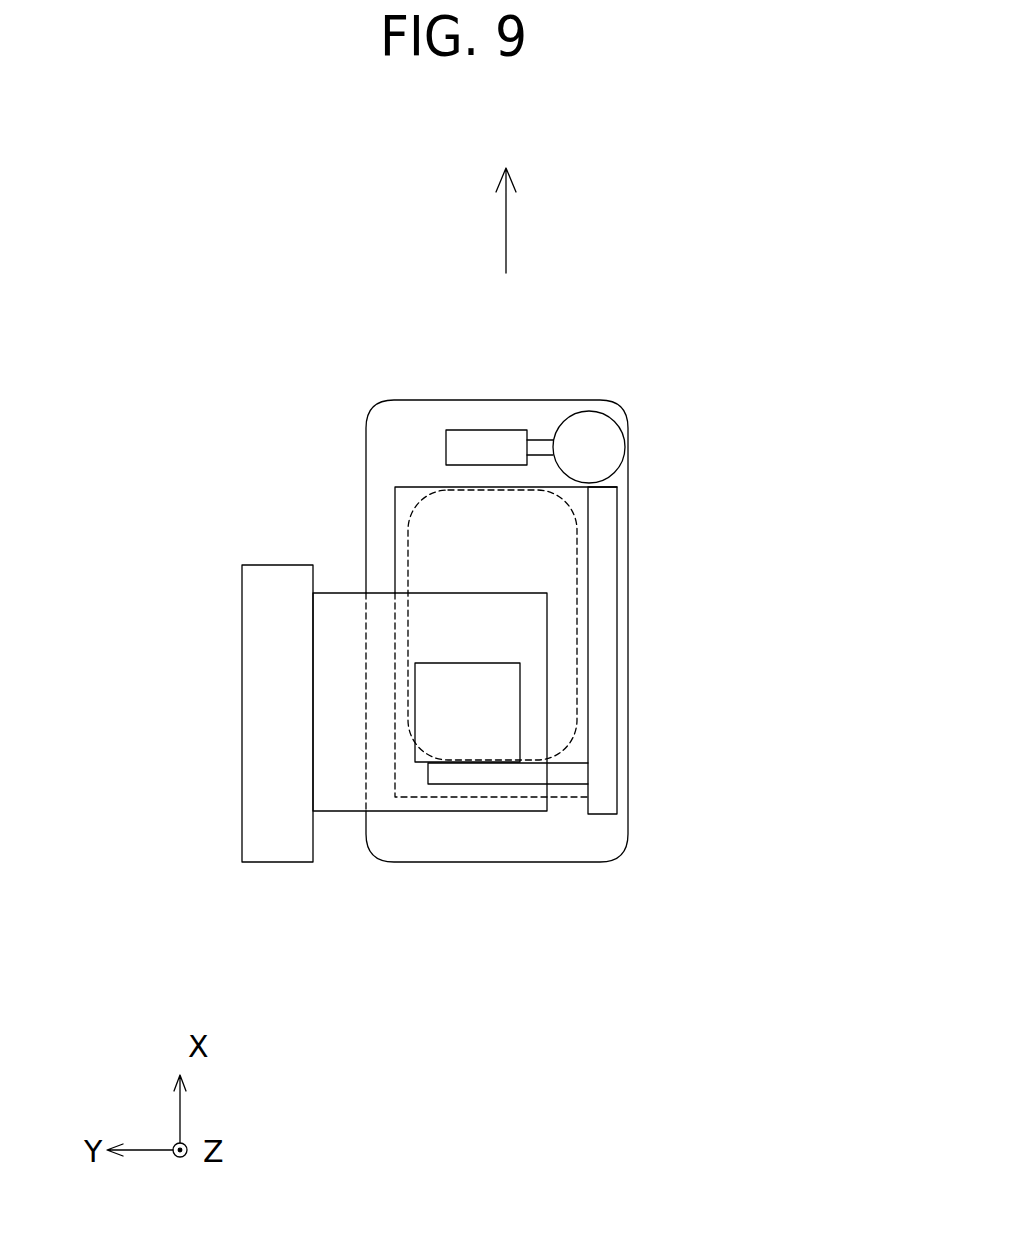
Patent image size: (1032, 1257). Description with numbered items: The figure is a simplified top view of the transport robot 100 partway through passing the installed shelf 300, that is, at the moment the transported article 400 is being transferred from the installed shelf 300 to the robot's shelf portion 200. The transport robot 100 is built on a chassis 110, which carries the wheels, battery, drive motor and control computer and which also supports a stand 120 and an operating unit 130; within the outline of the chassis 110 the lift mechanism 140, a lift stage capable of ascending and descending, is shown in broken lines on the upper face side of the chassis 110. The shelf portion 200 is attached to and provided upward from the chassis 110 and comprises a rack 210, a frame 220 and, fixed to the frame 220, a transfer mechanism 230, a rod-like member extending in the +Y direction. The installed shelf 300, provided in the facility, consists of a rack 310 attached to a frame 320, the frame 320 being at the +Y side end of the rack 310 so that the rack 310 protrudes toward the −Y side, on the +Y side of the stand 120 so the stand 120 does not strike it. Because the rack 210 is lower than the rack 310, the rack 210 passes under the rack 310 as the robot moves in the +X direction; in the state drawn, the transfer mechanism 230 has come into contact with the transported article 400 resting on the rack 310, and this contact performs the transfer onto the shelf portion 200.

The transport robot 100 is at (811, 579).
The chassis 110 is at (628, 497).
The stand 120 is at (603, 432).
The operating unit 130 is at (492, 443).
The lift mechanism 140 is at (570, 585).
The shelf portion 200 is at (683, 684).
The rack 210 is at (410, 500).
The frame 220 is at (616, 764).
The transfer mechanism 230 is at (551, 770).
The installed shelf 300 is at (159, 482).
The rack 310 is at (327, 663).
The frame 320 is at (257, 588).
The transported article 400 is at (440, 723).